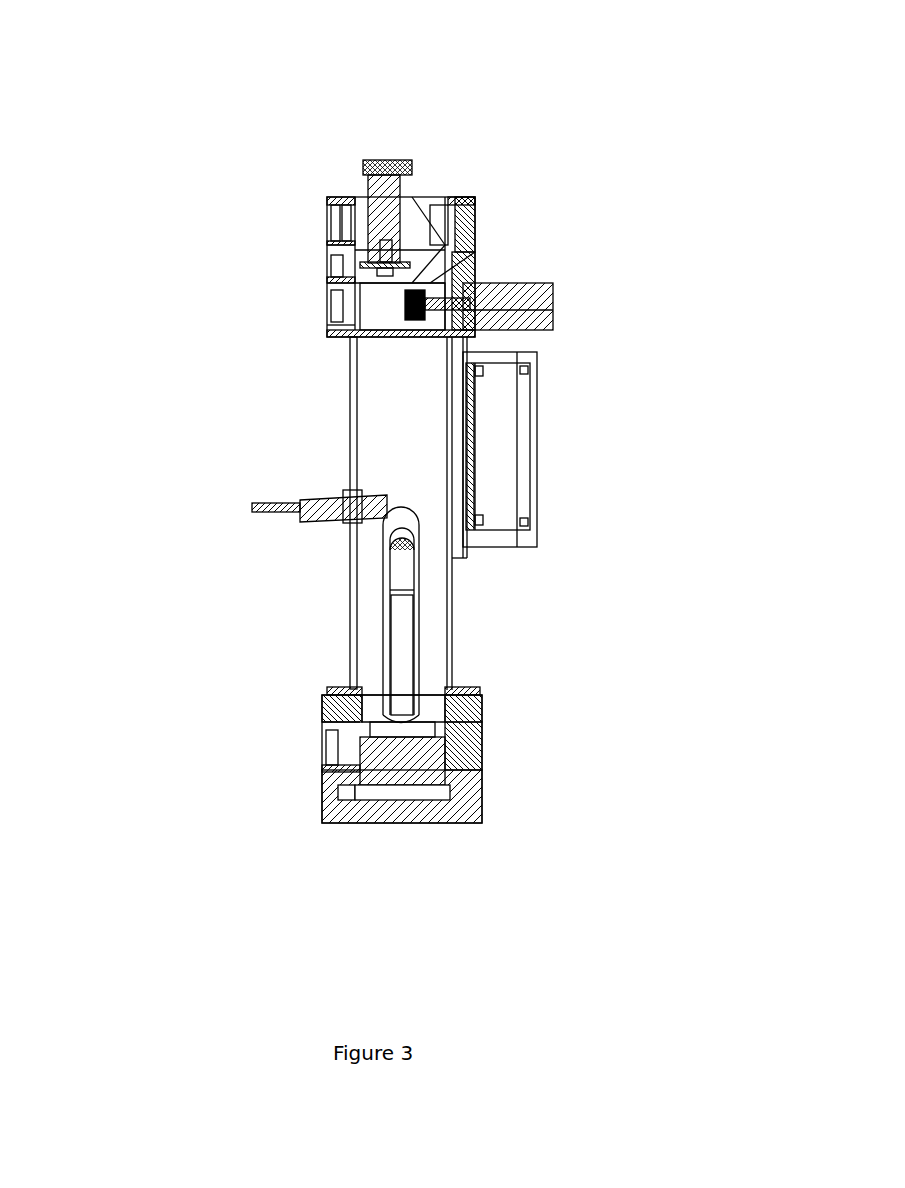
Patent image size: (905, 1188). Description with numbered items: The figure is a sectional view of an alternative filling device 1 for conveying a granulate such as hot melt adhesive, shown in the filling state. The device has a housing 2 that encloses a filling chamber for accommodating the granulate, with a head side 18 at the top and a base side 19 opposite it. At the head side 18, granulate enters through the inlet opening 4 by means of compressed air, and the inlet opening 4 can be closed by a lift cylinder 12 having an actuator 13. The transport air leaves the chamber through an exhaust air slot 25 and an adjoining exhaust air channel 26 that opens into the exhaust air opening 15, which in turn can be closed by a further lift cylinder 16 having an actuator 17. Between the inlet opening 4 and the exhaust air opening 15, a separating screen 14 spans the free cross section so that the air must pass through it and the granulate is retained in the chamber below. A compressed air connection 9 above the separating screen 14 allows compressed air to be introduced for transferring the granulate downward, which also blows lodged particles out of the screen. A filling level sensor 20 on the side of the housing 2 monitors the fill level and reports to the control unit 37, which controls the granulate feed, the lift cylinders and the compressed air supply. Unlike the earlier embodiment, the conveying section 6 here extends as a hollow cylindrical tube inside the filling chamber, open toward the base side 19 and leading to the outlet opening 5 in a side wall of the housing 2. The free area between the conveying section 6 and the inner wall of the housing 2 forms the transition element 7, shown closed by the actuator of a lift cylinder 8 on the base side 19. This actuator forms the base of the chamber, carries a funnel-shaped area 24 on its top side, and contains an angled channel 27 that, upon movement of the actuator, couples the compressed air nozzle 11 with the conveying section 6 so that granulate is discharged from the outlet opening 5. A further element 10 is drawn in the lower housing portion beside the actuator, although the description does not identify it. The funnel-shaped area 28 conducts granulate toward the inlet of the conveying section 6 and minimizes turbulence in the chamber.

The filling device 1 is at (100, 138).
The housing 2 is at (435, 625).
The inlet opening 4 is at (327, 305).
The outlet opening 5 is at (405, 575).
The conveying section 6 is at (403, 657).
The transition element 7 is at (482, 732).
The lift cylinder 8 is at (383, 807).
The compressed air connection 9 is at (327, 265).
The recess 10 is at (323, 747).
The compressed air nozzle 11 is at (325, 773).
The lift cylinder 12 is at (557, 290).
The actuator 13 is at (480, 283).
The separating screen 14 is at (475, 242).
The exhaust air opening 15 is at (325, 222).
The lift cylinder 16 is at (362, 170).
The actuator 17 is at (438, 180).
The head side 18 is at (390, 67).
The base side 19 is at (415, 880).
The filling level sensor 20 is at (307, 497).
The funnel-shaped area 24 is at (330, 693).
The exhaust air slot 25 is at (473, 197).
The exhaust air channel 26 is at (332, 197).
The channel 27 is at (337, 823).
The funnel-shaped area 28 is at (325, 707).
The control unit 37 is at (483, 467).